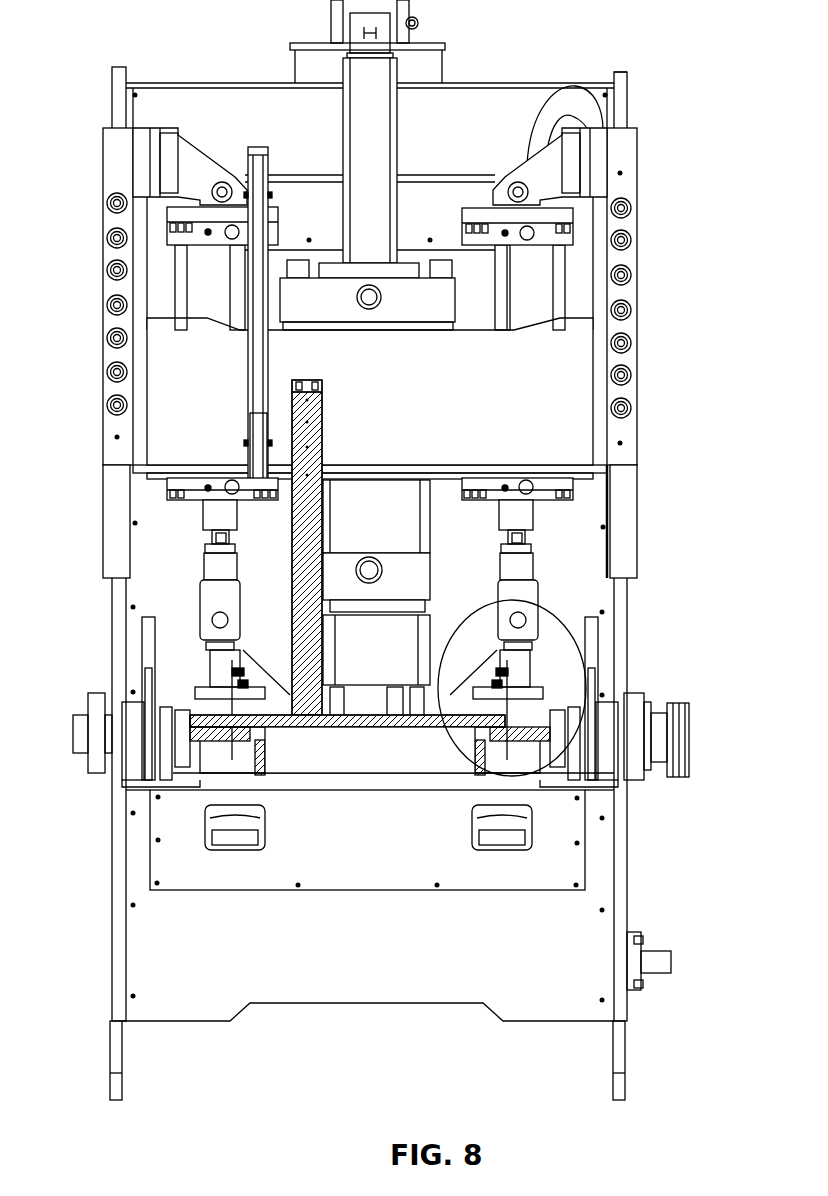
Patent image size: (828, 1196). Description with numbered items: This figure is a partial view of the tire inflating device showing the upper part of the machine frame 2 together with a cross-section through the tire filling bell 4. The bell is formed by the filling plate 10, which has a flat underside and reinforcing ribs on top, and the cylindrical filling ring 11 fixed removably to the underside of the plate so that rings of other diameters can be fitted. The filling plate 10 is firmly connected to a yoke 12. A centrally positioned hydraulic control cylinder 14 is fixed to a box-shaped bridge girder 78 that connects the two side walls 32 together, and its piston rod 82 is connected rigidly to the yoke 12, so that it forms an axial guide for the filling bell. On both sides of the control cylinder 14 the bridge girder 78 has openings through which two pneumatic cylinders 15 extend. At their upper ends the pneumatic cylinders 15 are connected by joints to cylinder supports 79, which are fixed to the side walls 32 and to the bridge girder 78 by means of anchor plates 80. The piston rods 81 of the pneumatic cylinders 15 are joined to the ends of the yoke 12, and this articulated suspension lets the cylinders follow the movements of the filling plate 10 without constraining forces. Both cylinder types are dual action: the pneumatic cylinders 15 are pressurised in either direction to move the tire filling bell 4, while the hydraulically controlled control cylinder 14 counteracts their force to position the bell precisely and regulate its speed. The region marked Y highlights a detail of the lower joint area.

The machine frame 2 is at (108, 930).
The tire filling bell 4 is at (240, 756).
The filling plate 10 is at (372, 700).
The filling ring 11 is at (358, 780).
The yoke 12 is at (290, 606).
The hydraulic control cylinder 14 is at (410, 295).
The pneumatic cylinders 15 is at (190, 267).
The side walls 32 is at (627, 110).
The bridge girder 78 is at (565, 362).
The cylinder supports 79 is at (185, 162).
The anchor plates 80 is at (140, 352).
The piston rods 81 is at (208, 510).
The piston rod 82 is at (378, 606).
The detail region Y is at (570, 640).